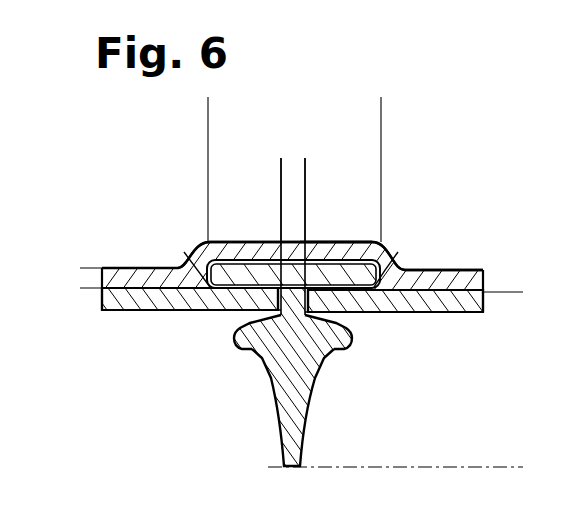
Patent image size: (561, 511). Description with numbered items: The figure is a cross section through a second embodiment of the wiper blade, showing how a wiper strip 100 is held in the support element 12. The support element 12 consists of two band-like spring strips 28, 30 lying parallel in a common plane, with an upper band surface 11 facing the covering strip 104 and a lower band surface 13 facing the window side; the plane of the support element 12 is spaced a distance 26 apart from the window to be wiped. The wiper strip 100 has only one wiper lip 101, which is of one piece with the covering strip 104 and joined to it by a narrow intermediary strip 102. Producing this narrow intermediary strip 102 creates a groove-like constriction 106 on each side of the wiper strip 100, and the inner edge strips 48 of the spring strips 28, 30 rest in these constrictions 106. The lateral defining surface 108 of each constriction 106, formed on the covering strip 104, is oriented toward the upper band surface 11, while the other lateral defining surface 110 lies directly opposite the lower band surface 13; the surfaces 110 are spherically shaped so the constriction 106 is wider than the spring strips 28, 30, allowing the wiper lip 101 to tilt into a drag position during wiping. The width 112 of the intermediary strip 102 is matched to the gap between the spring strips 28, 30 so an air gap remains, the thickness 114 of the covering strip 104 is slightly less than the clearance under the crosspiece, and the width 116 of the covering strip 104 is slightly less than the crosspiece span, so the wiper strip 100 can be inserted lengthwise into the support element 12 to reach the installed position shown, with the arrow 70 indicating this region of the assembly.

The upper band surface 11 is at (183, 262).
The support element 12 is at (430, 250).
The lower band surface 13 is at (115, 311).
The distance 26 is at (512, 292).
The spring strip 28 is at (104, 311).
The spring strip 30 is at (466, 314).
The inner edge strip 48 is at (273, 300).
The cover member 70 is at (358, 237).
The wiper strip 100 is at (294, 312).
The wiper lip 101 is at (310, 360).
The intermediary strip 102 is at (261, 241).
The covering strip 104 is at (343, 268).
The groove-like constriction 106 is at (278, 315).
The lateral defining surface 108 is at (205, 287).
The lateral defining surface 110 is at (237, 337).
The width 112 is at (350, 158).
The thickness 114 is at (85, 236).
The width 116 is at (208, 112).